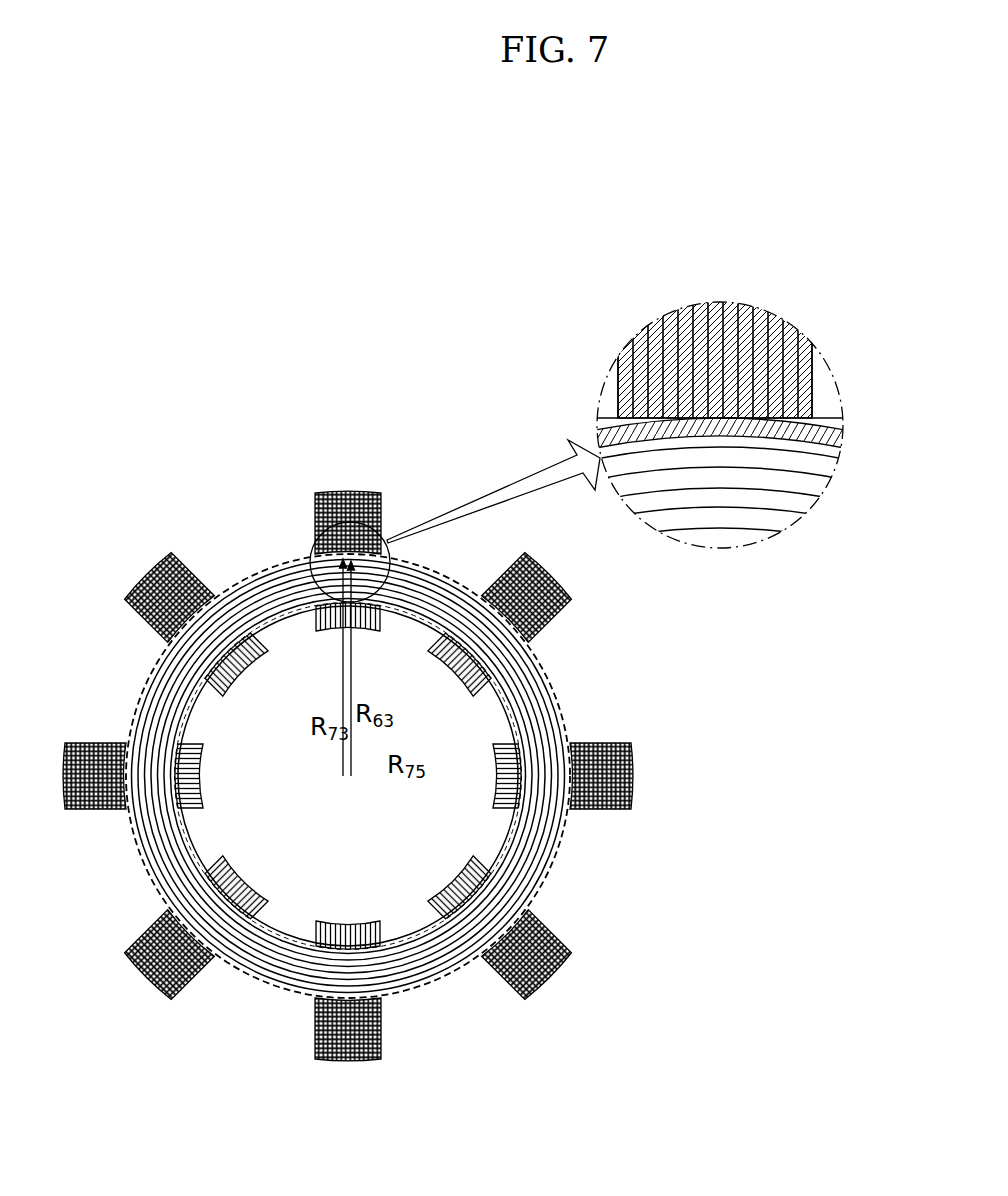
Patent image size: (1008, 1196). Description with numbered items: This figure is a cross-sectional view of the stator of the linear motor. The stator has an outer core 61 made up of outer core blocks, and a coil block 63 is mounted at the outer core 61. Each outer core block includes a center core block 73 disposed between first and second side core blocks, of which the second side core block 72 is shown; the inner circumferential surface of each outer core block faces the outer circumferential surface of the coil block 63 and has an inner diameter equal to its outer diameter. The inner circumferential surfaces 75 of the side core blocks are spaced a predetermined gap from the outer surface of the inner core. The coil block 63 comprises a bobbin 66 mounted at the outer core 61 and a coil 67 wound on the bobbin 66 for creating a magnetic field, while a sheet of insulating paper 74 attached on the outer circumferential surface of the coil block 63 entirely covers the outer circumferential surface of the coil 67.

The outer core 61 is at (584, 612).
The coil block 63 is at (513, 757).
The bobbin 66 is at (185, 723).
The coil 67 is at (145, 687).
The second side core block 72 is at (384, 630).
The center core block 73 is at (317, 510).
The insulating paper 74 is at (155, 657).
The inner circumferential surfaces 75 is at (450, 678).